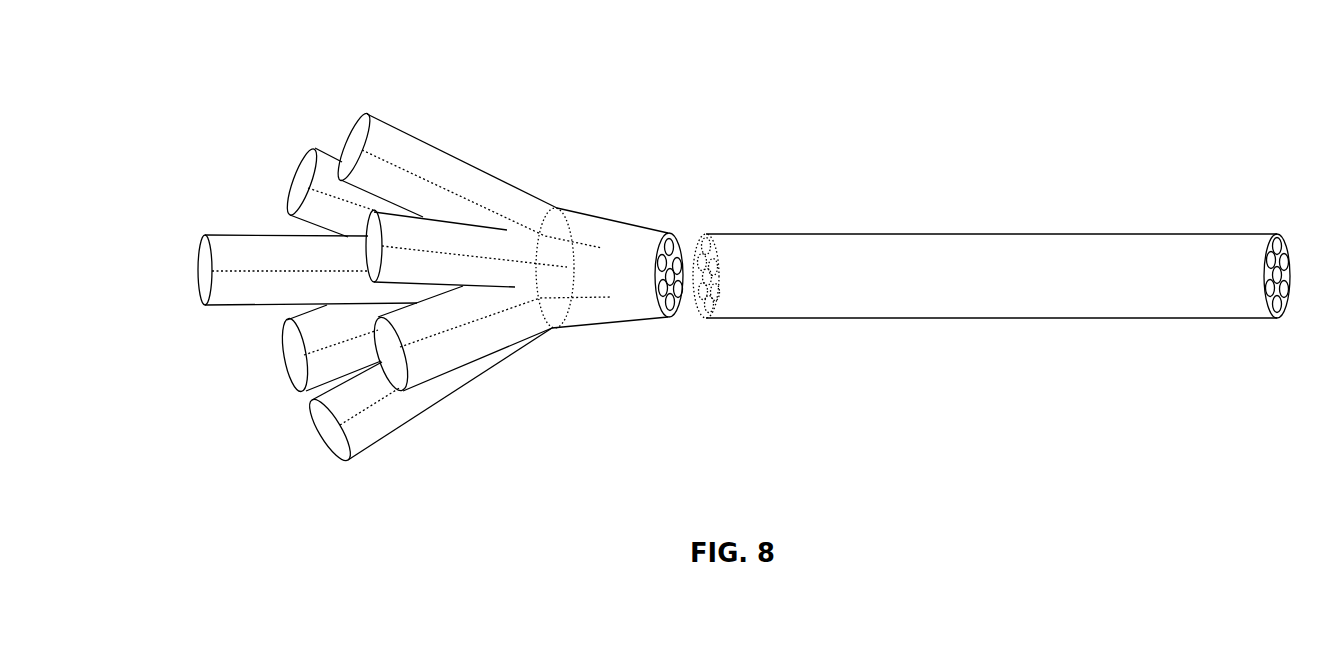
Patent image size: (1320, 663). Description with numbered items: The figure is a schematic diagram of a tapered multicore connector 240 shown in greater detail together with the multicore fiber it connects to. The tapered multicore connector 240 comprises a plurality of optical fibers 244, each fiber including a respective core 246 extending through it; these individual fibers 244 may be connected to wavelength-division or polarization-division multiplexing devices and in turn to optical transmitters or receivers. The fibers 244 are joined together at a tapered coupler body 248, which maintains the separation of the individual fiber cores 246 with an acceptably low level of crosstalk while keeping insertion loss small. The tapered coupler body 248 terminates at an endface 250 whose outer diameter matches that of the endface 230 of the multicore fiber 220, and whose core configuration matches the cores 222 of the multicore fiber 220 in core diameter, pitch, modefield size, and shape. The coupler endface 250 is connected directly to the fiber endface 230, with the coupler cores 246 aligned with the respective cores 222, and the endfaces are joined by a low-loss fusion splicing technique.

The tapered multicore connector 240 is at (444, 247).
The optical fiber 244 is at (396, 127).
The core 246 is at (427, 177).
The tapered coupler body 248 is at (623, 284).
The endface 250 is at (683, 302).
The multicore fiber 220 is at (982, 280).
The endface 230 is at (698, 243).
The core 222 is at (710, 302).